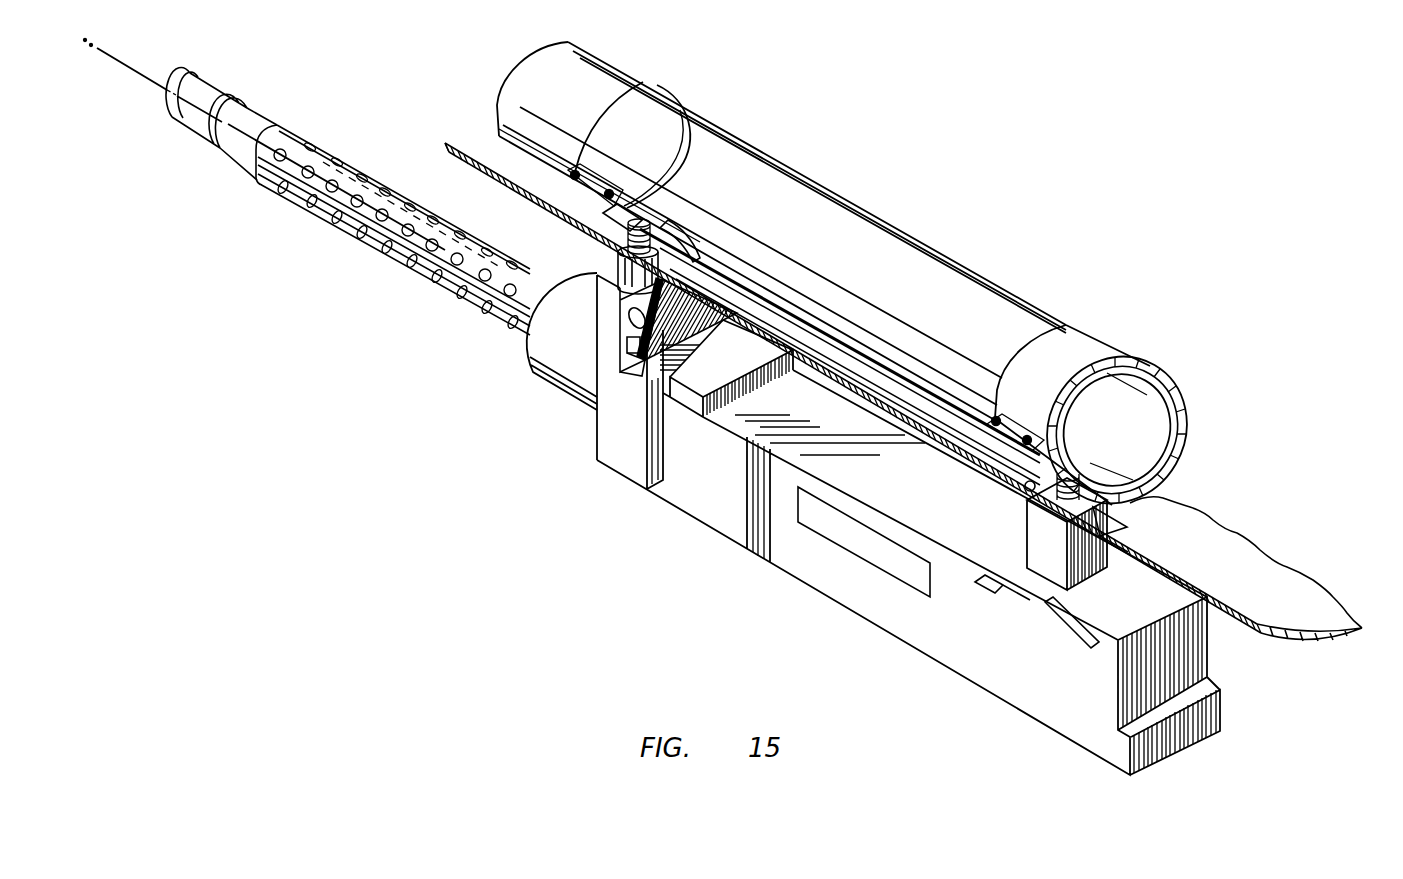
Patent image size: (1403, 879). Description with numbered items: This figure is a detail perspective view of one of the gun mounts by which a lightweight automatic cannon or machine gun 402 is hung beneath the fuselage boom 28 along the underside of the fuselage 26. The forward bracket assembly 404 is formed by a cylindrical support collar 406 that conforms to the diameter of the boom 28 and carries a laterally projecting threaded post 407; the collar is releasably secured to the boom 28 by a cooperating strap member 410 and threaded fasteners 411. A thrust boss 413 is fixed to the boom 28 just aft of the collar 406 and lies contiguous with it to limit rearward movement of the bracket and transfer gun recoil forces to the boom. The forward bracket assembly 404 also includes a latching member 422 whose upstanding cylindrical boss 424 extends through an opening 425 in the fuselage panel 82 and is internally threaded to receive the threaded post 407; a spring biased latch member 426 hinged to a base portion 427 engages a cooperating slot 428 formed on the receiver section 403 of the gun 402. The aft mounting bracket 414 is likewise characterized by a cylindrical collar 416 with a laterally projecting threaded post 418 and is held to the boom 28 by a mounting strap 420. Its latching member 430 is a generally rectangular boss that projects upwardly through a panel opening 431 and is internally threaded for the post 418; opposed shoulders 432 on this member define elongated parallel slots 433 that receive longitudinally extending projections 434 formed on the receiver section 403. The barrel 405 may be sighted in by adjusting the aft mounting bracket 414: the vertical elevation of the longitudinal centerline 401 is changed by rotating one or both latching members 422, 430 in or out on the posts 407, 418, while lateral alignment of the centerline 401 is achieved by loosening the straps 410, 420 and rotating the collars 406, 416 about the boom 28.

The fuselage 26 is at (470, 152).
The fuselage boom 28 is at (612, 36).
The fuselage panel 82 is at (1203, 518).
The longitudinal centerline 401 is at (132, 96).
The machine gun 402 is at (716, 535).
The receiver section 403 is at (633, 492).
The forward bracket assembly 404 is at (683, 94).
The barrel 405 is at (302, 210).
The cylindrical support collar 406 is at (634, 210).
The threaded post 407 is at (710, 252).
The strap member 410 is at (666, 130).
The threaded fasteners 411 is at (611, 190).
The thrust boss 413 is at (680, 233).
The aft mounting bracket 414 is at (1092, 334).
The cylindrical collar 416 is at (1063, 428).
The threaded post 418 is at (1106, 455).
The mounting strap 420 is at (1018, 355).
The latching member 422 is at (612, 300).
The cylindrical boss 424 is at (618, 266).
The opening 425 is at (622, 243).
The latch member 426 is at (638, 374).
The base portion 427 is at (608, 333).
The slot 428 is at (625, 347).
The latching member 430 is at (1018, 603).
The panel opening 431 is at (1027, 489).
The shoulders 432 is at (1137, 563).
The slots 433 is at (1050, 620).
The projections 434 is at (983, 580).